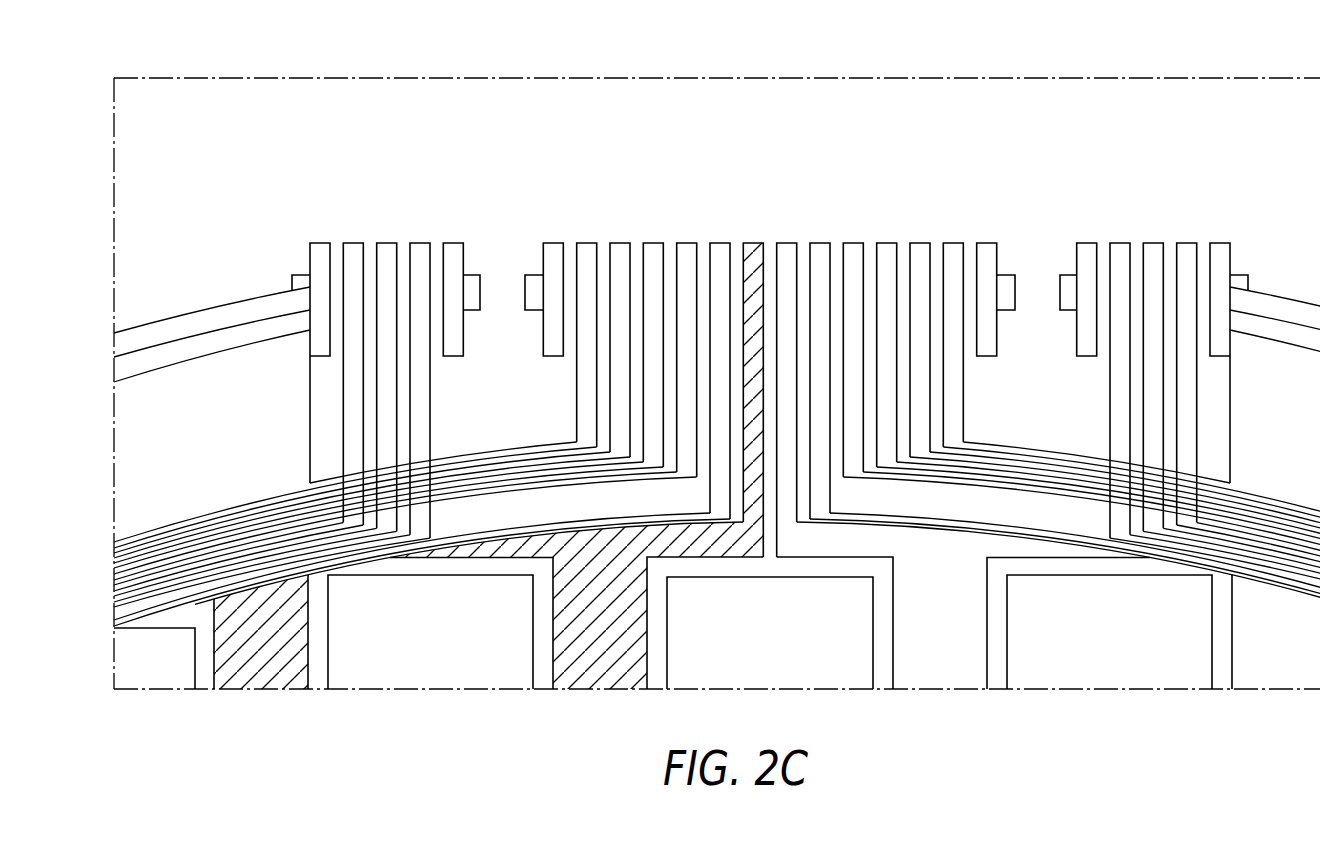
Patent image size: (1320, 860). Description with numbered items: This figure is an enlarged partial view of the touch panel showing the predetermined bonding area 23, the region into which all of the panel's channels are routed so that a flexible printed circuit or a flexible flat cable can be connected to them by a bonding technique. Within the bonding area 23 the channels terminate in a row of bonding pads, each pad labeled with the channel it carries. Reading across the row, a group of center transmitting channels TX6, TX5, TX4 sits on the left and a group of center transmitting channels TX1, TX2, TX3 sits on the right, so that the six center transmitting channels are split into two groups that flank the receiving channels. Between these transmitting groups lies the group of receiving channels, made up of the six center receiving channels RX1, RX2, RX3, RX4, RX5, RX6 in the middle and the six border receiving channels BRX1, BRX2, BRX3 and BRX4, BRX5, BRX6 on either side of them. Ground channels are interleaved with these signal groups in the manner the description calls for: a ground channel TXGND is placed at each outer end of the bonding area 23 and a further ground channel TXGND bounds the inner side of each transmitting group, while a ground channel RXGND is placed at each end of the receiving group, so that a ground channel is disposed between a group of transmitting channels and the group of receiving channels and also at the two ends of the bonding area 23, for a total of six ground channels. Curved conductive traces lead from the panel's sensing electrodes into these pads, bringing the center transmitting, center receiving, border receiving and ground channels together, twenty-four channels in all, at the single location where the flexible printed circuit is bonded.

The predetermined bonding area 23 is at (143, 49).
The ground channel for center transmitting channels TXGND is at (770, 311).
The center transmitting channel TX1 is at (1121, 361).
The center transmitting channel TX2 is at (1154, 358).
The center transmitting channel TX3 is at (1187, 355).
The center transmitting channel TX4 is at (421, 361).
The center transmitting channel TX5 is at (387, 358).
The center transmitting channel TX6 is at (354, 355).
The ground channel for center and border receiving channels RXGND is at (770, 248).
The center receiving channel RX1 is at (687, 331).
The center receiving channel RX2 is at (721, 352).
The center receiving channel RX3 is at (754, 371).
The center receiving channel RX4 is at (787, 371).
The center receiving channel RX5 is at (821, 352).
The center receiving channel RX6 is at (854, 331).
The border receiving channel BRX1 is at (587, 307).
The border receiving channel BRX2 is at (621, 312).
The border receiving channel BRX3 is at (654, 317).
The border receiving channel BRX4 is at (887, 317).
The border receiving channel BRX5 is at (921, 312).
The border receiving channel BRX6 is at (954, 307).